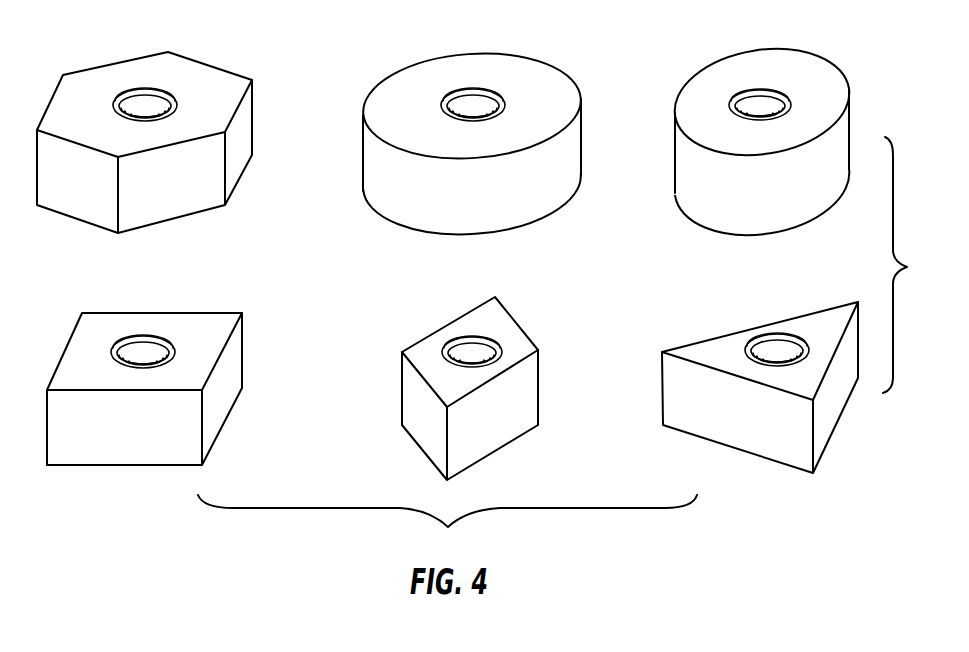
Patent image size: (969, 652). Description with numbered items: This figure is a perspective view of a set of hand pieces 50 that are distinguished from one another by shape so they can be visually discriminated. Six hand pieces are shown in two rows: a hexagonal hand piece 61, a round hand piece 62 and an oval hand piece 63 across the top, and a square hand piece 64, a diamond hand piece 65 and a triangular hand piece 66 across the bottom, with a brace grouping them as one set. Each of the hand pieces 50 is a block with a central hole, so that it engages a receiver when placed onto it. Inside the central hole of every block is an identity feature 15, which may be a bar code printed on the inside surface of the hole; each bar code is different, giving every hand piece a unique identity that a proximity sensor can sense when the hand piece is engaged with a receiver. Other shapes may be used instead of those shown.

The hand piece identity feature 15 is at (167, 90).
The hand pieces 50 is at (109, 521).
The hexagonal hand piece 61 is at (103, 75).
The round hand piece 62 is at (435, 75).
The oval hand piece 63 is at (720, 75).
The square hand piece 64 is at (202, 322).
The diamond hand piece 65 is at (492, 322).
The triangular hand piece 66 is at (813, 320).